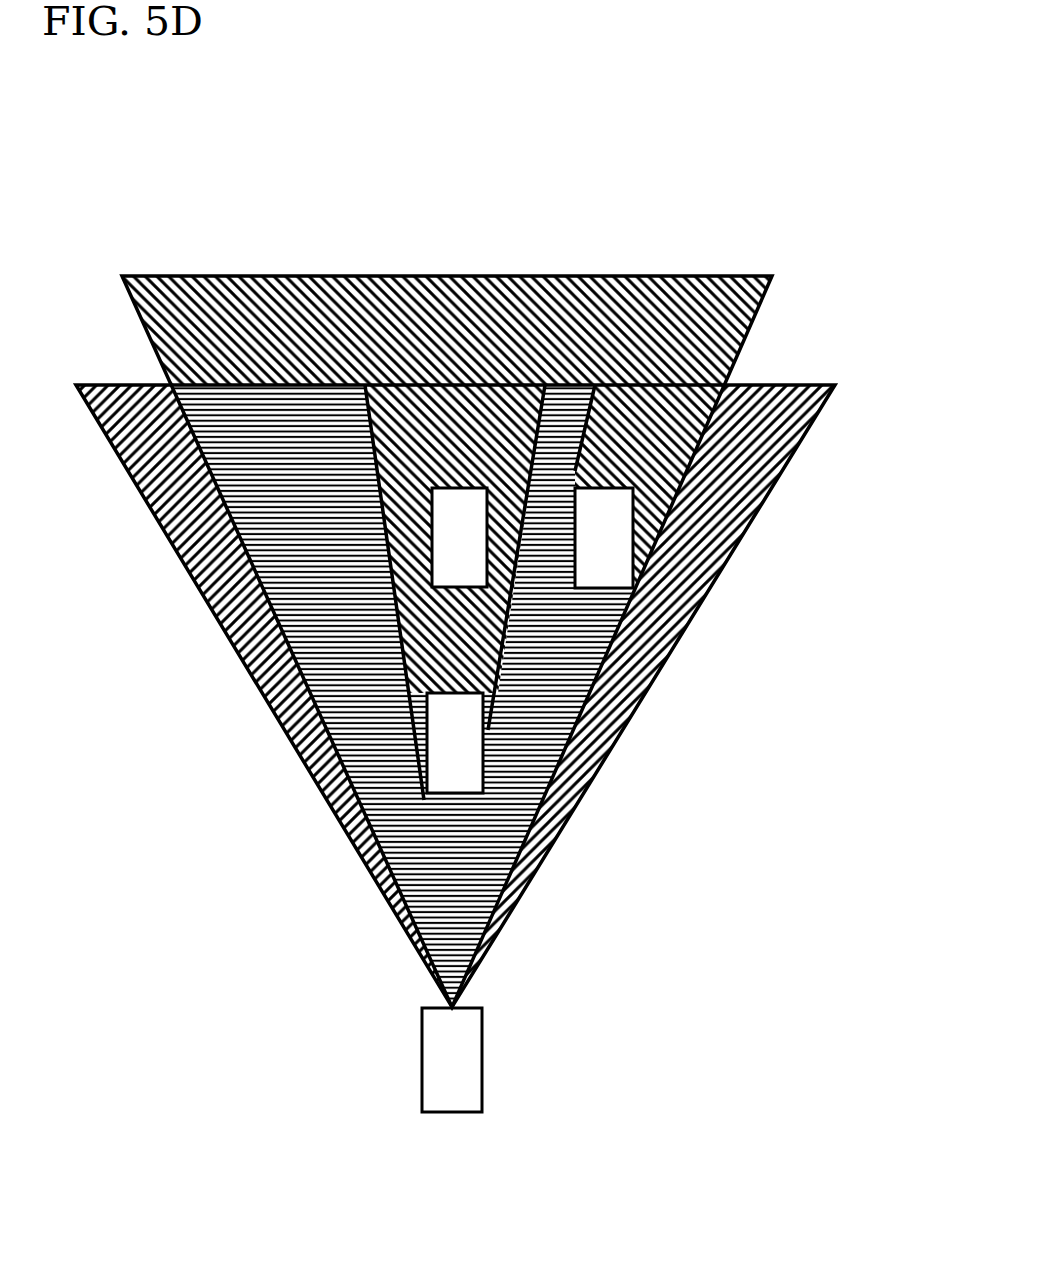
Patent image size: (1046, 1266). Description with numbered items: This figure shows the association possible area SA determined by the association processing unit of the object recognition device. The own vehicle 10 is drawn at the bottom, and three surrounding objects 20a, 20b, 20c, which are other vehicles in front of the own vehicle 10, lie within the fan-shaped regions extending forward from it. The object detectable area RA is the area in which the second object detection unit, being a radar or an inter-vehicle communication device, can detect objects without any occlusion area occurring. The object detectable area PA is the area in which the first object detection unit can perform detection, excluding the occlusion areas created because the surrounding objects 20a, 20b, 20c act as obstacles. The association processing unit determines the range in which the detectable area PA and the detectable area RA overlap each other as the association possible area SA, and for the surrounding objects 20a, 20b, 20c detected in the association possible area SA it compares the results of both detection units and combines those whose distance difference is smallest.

The own vehicle 10 is at (473, 1068).
The surrounding object 20a is at (605, 548).
The surrounding object 20b is at (462, 570).
The surrounding object 20c is at (453, 753).
The object detectable area RA is at (697, 313).
The object detectable area PA is at (740, 457).
The association possible area SA is at (343, 647).